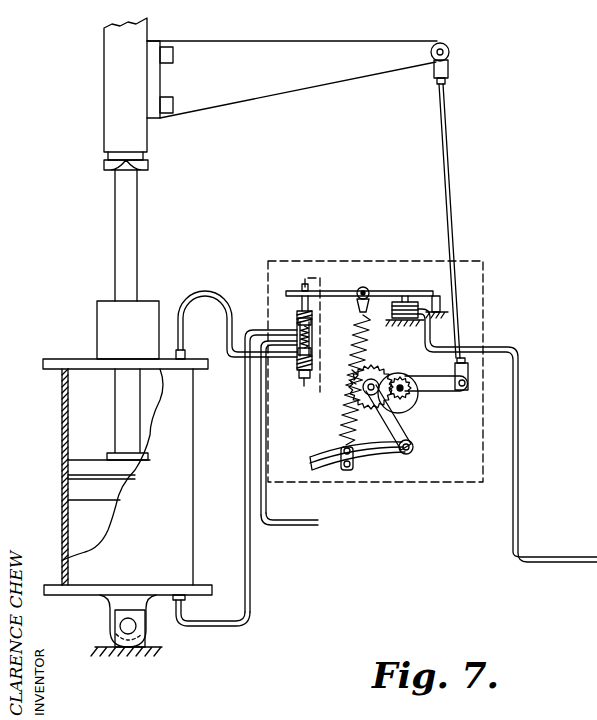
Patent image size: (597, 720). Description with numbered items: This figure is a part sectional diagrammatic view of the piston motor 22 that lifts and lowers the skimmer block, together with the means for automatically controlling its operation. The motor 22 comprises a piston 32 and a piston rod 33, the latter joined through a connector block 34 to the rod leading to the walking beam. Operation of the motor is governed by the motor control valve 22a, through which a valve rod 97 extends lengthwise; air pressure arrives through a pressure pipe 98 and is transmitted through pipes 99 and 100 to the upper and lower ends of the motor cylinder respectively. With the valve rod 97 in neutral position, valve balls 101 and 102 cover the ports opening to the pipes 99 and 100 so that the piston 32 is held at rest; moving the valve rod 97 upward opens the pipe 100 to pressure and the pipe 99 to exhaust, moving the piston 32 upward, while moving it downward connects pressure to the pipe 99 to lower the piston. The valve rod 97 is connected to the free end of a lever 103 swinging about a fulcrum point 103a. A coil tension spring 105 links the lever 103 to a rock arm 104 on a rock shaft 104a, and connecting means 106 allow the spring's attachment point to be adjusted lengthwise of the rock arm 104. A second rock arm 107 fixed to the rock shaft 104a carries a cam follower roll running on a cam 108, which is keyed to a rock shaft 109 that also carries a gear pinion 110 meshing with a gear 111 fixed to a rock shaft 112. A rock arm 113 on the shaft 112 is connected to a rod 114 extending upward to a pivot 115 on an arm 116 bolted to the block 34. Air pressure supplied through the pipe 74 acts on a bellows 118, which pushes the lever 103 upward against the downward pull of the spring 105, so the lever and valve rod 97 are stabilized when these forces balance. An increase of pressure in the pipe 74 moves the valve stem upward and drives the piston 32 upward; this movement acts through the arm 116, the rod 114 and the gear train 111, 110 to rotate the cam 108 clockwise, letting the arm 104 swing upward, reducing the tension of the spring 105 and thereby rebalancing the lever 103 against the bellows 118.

The piston motor 22 is at (58, 405).
The motor control valve 22a is at (315, 346).
The piston 32 is at (88, 463).
The piston rod 33 is at (112, 252).
The connector block 34 is at (121, 117).
The pipe 74 is at (519, 388).
The valve rod 97 is at (315, 346).
The pressure pipe 98 is at (292, 527).
The pipe 99 is at (224, 292).
The pipe 100 is at (252, 585).
The valve ball 101 is at (312, 352).
The valve ball 102 is at (337, 318).
The lever 103 is at (330, 291).
The fulcrum point 103a is at (440, 303).
The rock arm 104 is at (373, 462).
The rock shaft 104a is at (413, 448).
The coil tension spring 105 is at (348, 418).
The connecting means 106 is at (343, 470).
The rock arm 107 is at (413, 419).
The cam 108 is at (416, 398).
The rock shaft 109 is at (405, 380).
The gear pinion 110 is at (392, 374).
The gear 111 is at (357, 373).
The rock shaft 112 is at (352, 382).
The rock arm 113 is at (436, 384).
The rod 114 is at (460, 152).
The pivot 115 is at (450, 52).
The arm 116 is at (356, 70).
The bellows 118 is at (403, 300).